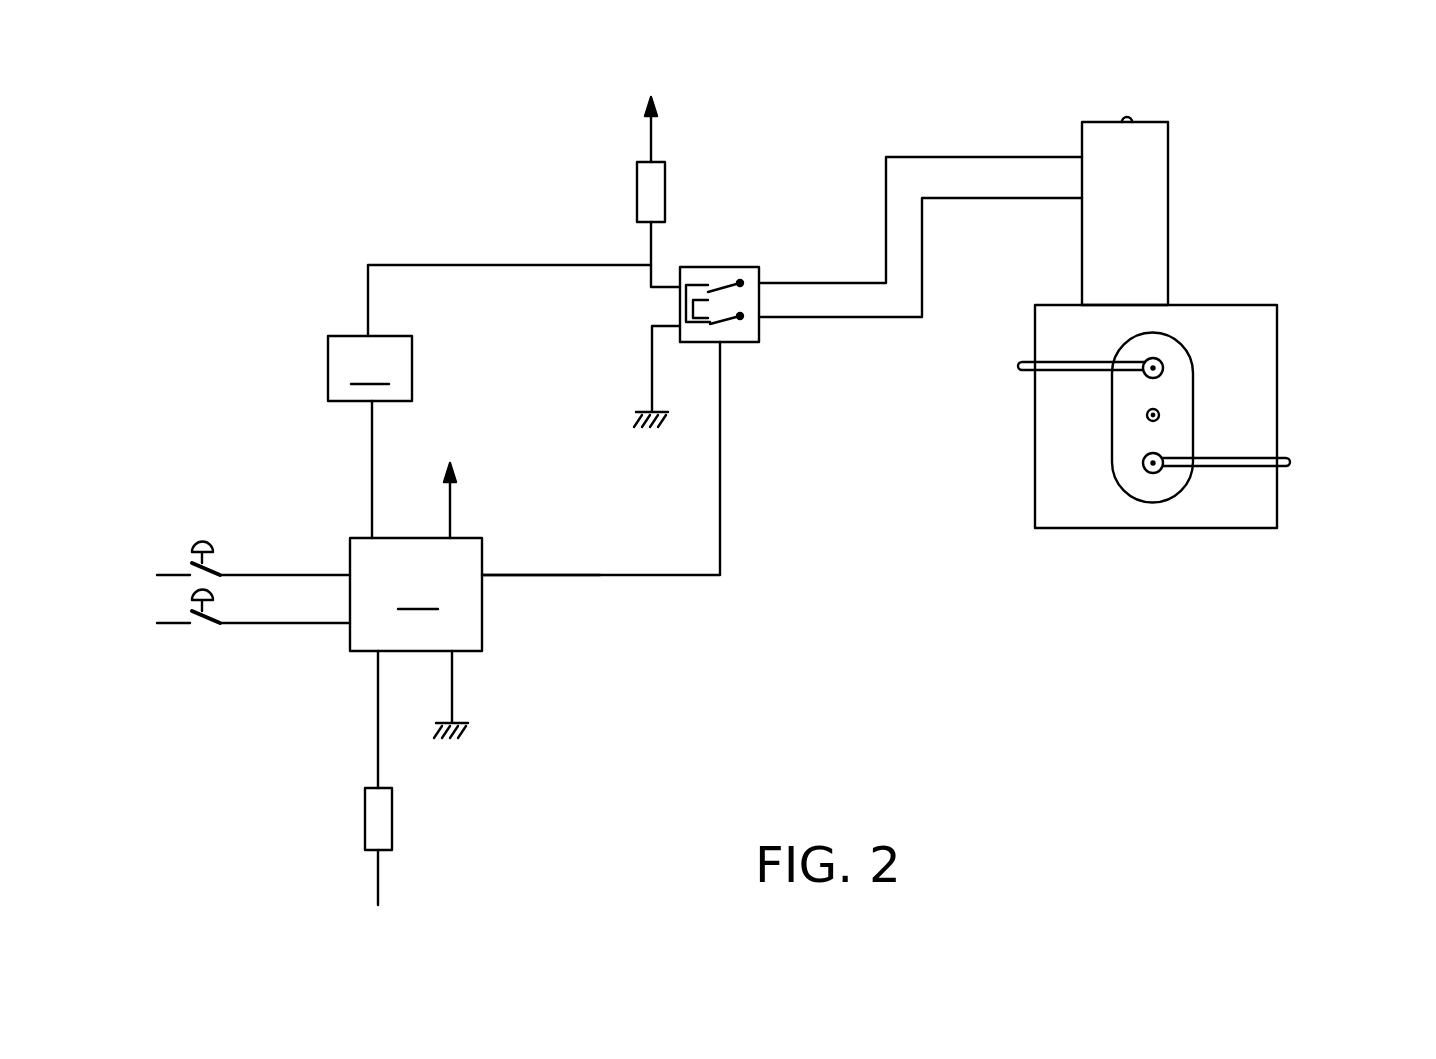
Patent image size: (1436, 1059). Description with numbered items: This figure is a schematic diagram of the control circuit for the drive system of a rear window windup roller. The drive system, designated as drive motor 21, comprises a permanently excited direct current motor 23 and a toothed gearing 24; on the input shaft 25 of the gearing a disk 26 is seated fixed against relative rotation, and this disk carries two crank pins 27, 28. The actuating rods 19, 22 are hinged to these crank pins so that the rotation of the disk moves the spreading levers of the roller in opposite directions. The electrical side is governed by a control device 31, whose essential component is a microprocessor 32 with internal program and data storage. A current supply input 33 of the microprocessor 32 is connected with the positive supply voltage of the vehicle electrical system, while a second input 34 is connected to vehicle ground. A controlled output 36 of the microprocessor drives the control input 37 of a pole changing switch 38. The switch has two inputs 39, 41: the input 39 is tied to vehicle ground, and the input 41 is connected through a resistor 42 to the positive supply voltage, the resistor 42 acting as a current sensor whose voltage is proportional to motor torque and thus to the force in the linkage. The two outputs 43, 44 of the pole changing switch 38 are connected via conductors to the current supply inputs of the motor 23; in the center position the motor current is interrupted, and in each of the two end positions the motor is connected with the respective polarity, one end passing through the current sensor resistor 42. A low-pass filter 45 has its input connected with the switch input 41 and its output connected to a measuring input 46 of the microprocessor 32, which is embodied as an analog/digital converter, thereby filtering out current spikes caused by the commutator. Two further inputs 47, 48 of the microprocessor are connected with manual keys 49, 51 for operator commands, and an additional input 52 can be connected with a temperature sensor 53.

The actuating rod 19 is at (1038, 372).
The drive motor 21 is at (1303, 163).
The actuating rod 22 is at (1290, 455).
The direct current motor 23 is at (1145, 195).
The toothed gearing 24 is at (1230, 303).
The input shaft 25 is at (1160, 412).
The disk 26 is at (1157, 487).
The crank pin 27 is at (1161, 362).
The crank pin 28 is at (1160, 470).
The control device 31 is at (820, 162).
The microprocessor 32 is at (416, 594).
The current supply input 33 is at (450, 538).
The second input 34 is at (453, 653).
The controlled output 36 is at (483, 577).
The control input 37 is at (727, 347).
The pole changing switch 38 is at (718, 267).
The input 39 is at (677, 342).
The input 41 is at (665, 268).
The resistor 42 is at (665, 185).
The output 43 is at (759, 276).
The output 44 is at (763, 320).
The low-pass filter 45 is at (412, 368).
The measuring input 46 is at (372, 538).
The input 47 is at (348, 572).
The input 48 is at (350, 623).
The manual key 49 is at (173, 527).
The manual key 51 is at (207, 640).
The input 52 is at (378, 653).
The temperature sensor 53 is at (388, 837).